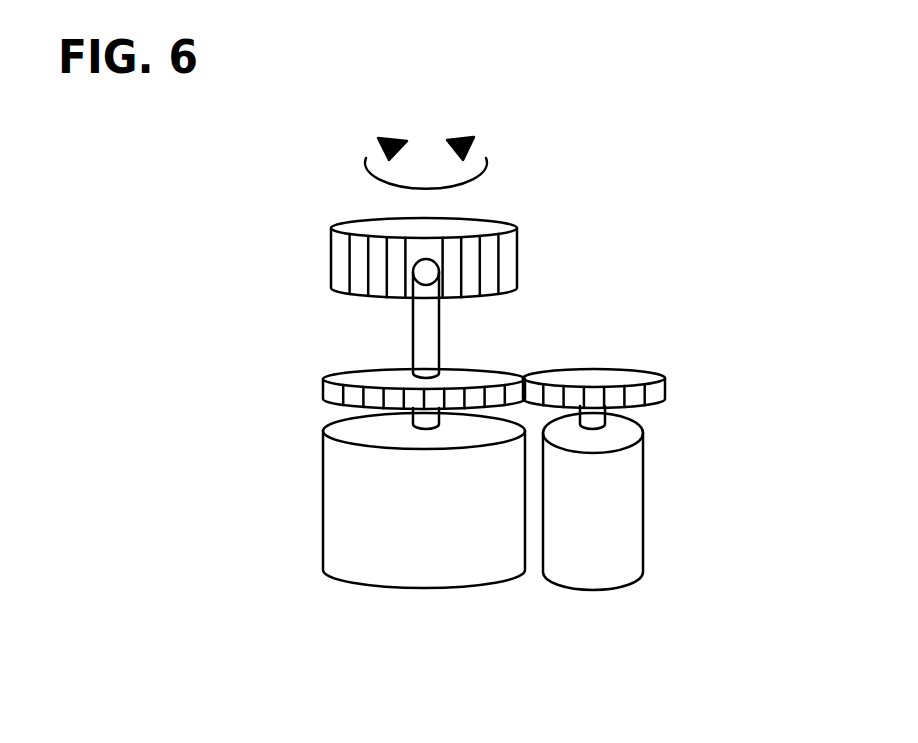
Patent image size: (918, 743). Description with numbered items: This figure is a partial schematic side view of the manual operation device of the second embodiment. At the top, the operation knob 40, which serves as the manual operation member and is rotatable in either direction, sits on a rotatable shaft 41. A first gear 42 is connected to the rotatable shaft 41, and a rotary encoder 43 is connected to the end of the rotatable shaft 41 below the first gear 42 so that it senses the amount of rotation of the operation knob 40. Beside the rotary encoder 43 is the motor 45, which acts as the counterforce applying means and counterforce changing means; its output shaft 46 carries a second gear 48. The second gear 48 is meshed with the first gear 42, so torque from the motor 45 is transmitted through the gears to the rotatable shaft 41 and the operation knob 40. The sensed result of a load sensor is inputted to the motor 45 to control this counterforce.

The operation knob 40 is at (500, 260).
The rotatable shaft 41 is at (430, 332).
The first gear 42 is at (365, 377).
The rotary encoder 43 is at (340, 557).
The motor 45 is at (643, 540).
The output shaft 46 is at (600, 422).
The second gear 48 is at (667, 392).